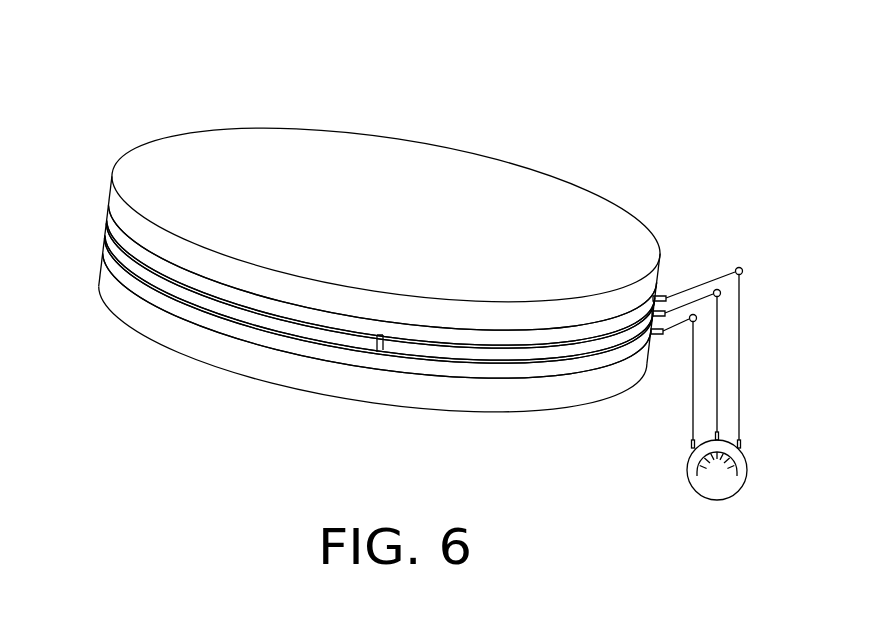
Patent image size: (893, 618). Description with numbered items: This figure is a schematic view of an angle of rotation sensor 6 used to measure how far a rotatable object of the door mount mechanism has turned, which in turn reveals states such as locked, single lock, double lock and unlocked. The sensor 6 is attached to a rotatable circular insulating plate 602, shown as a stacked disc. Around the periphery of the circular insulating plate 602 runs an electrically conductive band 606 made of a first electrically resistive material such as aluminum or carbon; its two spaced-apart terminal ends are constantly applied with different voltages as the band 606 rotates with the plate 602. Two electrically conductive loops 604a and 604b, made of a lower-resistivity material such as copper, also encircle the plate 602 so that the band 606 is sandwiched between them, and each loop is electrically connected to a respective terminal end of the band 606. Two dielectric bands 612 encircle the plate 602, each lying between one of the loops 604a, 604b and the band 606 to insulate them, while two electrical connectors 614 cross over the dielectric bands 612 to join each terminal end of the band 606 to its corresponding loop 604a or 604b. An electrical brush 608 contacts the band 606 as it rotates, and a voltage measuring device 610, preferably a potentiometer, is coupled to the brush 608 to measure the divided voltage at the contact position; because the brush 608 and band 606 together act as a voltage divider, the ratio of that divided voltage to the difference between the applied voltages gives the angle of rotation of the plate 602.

The angle of rotation sensor 6 is at (487, 90).
The circular insulating plate 602 is at (538, 175).
The electrically conductive loop 604a is at (147, 258).
The electrically conductive loop 604b is at (127, 278).
The electrically conductive band 606 is at (217, 307).
The electrical brush 608 is at (655, 300).
The voltage measuring device 610 is at (688, 487).
The dielectric band 612 is at (110, 257).
The electrical connector 614 is at (372, 352).